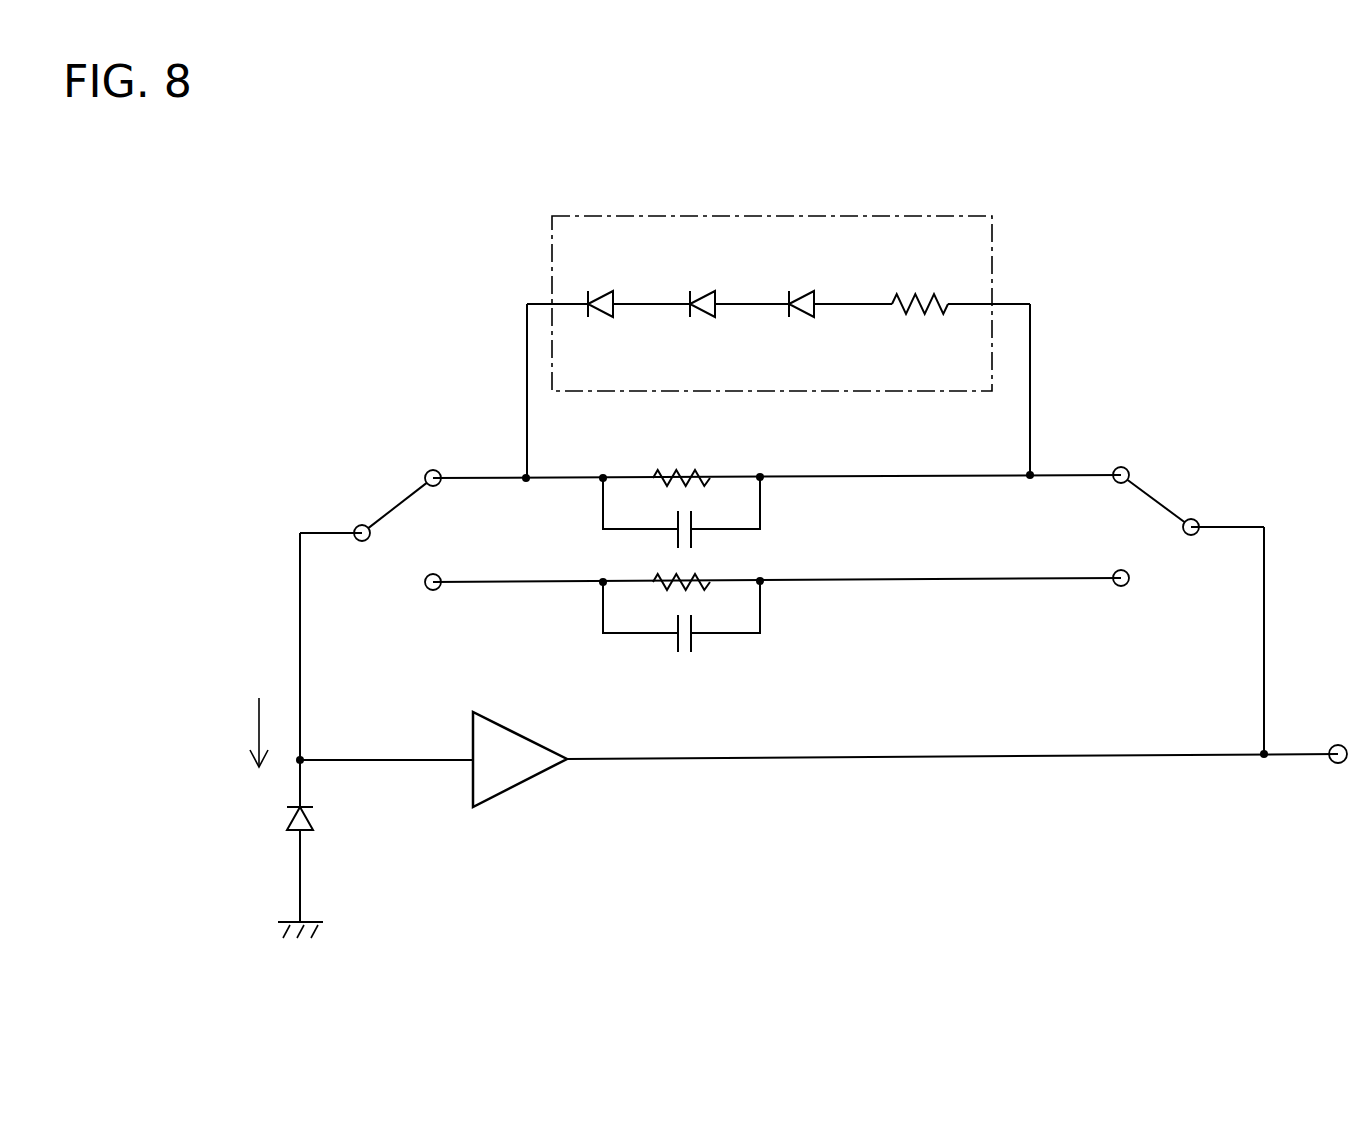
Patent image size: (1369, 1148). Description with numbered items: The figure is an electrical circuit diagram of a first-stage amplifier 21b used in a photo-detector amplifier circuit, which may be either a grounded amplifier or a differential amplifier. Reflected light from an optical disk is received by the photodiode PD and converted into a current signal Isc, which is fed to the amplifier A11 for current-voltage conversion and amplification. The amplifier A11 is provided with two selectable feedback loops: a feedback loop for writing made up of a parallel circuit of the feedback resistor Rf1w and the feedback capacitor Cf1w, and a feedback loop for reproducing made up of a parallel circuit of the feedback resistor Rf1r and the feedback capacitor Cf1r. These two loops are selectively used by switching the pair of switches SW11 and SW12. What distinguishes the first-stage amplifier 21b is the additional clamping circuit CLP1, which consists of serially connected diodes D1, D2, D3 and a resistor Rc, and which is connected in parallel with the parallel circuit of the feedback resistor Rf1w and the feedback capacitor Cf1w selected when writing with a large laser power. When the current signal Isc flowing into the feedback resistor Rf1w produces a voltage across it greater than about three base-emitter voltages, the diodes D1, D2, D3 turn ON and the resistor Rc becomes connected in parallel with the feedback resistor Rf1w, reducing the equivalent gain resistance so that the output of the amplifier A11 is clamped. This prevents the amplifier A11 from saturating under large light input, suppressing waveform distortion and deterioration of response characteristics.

The first-stage amplifier 21b is at (398, 256).
The clamping circuit CLP1 is at (848, 213).
The diode D1 is at (607, 290).
The diode D2 is at (707, 290).
The diode D3 is at (807, 290).
The resistor Rc is at (915, 292).
The switch SW12 is at (397, 512).
The switch SW11 is at (1163, 512).
The feedback resistor Rf1w is at (703, 476).
The feedback capacitor Cf1w is at (678, 541).
The feedback resistor Rf1r is at (703, 580).
The feedback capacitor Cf1r is at (678, 644).
The current signal Isc is at (242, 732).
The photodiode PD is at (287, 819).
The amplifier A11 is at (506, 784).